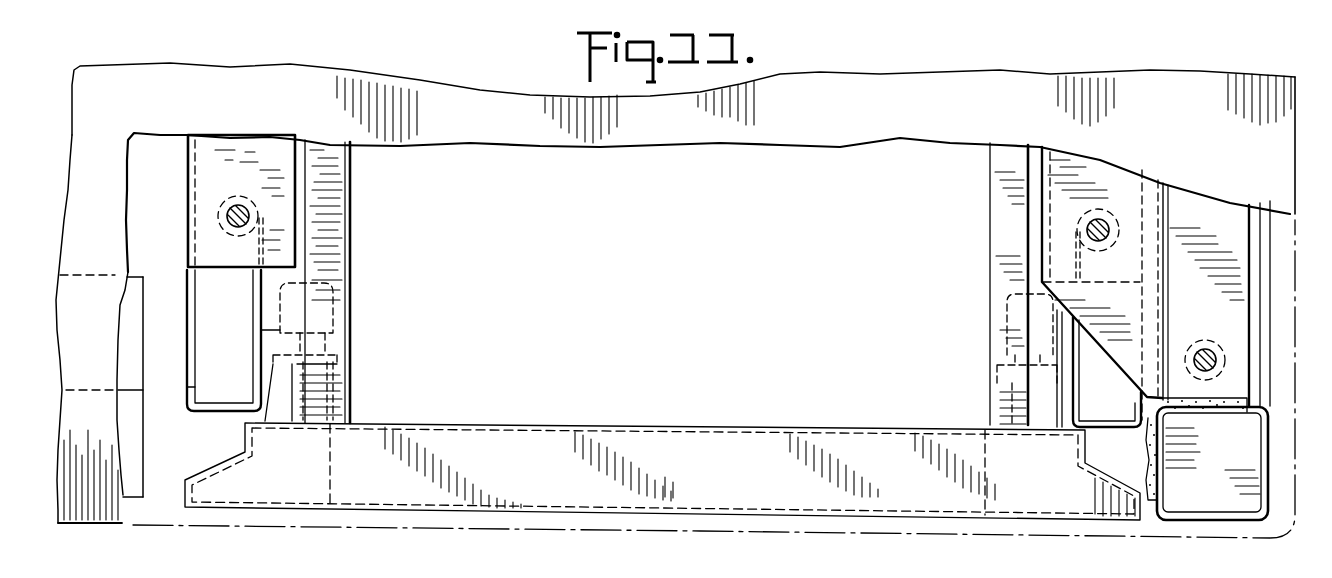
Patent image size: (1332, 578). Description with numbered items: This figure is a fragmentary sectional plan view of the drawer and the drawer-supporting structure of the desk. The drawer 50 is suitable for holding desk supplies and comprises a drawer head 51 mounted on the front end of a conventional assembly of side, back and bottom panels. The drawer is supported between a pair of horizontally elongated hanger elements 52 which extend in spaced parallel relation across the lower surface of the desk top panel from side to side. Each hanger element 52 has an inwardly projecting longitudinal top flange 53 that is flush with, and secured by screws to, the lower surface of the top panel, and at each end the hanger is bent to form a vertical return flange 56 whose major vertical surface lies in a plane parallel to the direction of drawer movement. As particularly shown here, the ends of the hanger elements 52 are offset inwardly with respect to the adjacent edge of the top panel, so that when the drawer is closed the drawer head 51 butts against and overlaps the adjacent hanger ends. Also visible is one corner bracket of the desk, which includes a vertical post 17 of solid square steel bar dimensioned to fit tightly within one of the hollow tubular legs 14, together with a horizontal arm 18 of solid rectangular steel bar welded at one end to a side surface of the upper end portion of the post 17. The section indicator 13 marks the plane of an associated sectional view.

The section line 13- 13 is at (88, 150).
The legs 14 is at (1213, 520).
The vertical post 17 is at (1240, 441).
The horizontal arm 18 is at (1220, 295).
The drawer 50 is at (333, 200).
The drawer head 51 is at (729, 426).
The hanger elements 52 is at (186, 276).
The longitudinal top flange 53 is at (285, 247).
The vertical return flange 56 is at (250, 297).